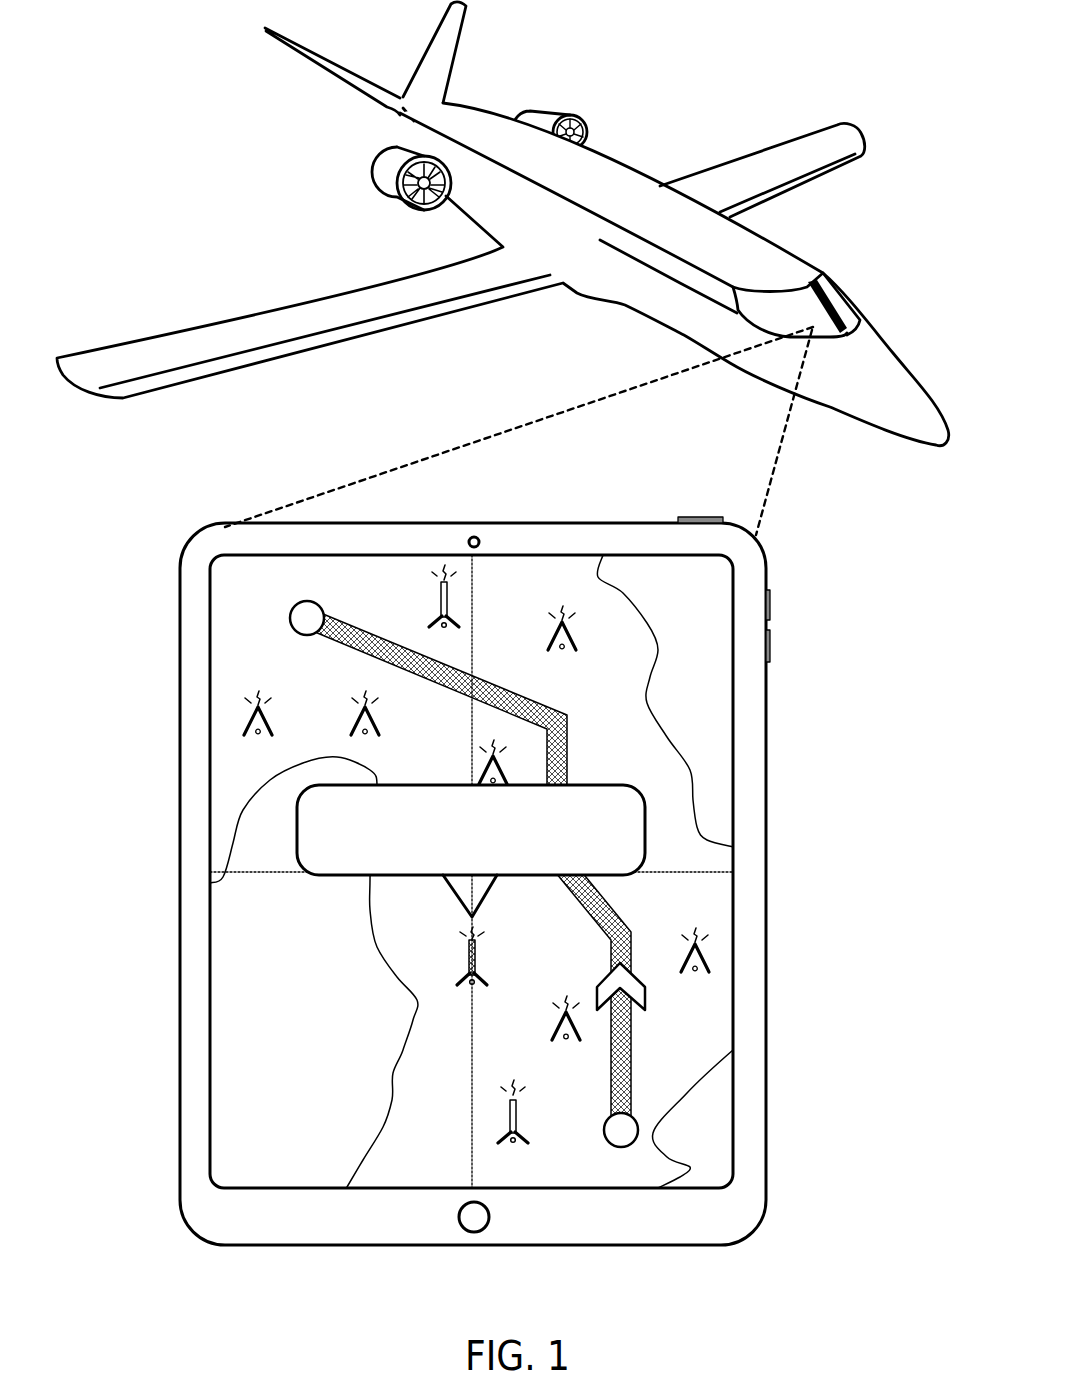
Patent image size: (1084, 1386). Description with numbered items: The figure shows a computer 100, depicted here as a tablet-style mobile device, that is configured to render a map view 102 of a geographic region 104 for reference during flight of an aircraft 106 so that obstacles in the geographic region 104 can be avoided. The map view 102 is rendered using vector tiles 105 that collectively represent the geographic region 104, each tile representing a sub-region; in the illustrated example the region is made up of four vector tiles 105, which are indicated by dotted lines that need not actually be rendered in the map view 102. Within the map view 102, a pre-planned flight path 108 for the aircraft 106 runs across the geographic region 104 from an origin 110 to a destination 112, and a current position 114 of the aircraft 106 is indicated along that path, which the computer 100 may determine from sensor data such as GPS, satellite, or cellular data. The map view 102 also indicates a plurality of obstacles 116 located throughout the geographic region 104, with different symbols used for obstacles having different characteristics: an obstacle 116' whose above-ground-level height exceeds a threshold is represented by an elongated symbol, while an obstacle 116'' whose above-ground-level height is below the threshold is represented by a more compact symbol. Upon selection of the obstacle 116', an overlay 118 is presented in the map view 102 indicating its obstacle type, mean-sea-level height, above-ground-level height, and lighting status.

The computer 100 is at (180, 592).
The map view 102 is at (699, 609).
The geographic region 104 is at (243, 670).
The vector tiles 105 is at (265, 878).
The aircraft 106 is at (731, 88).
The flight path 108 is at (631, 1038).
The origin 110 is at (623, 1147).
The destination 112 is at (308, 600).
The current position 114 is at (607, 977).
The obstacles 116 is at (459, 1122).
The obstacle 116' is at (437, 954).
The obstacle 116'' is at (520, 1025).
The overlay 118 is at (598, 785).